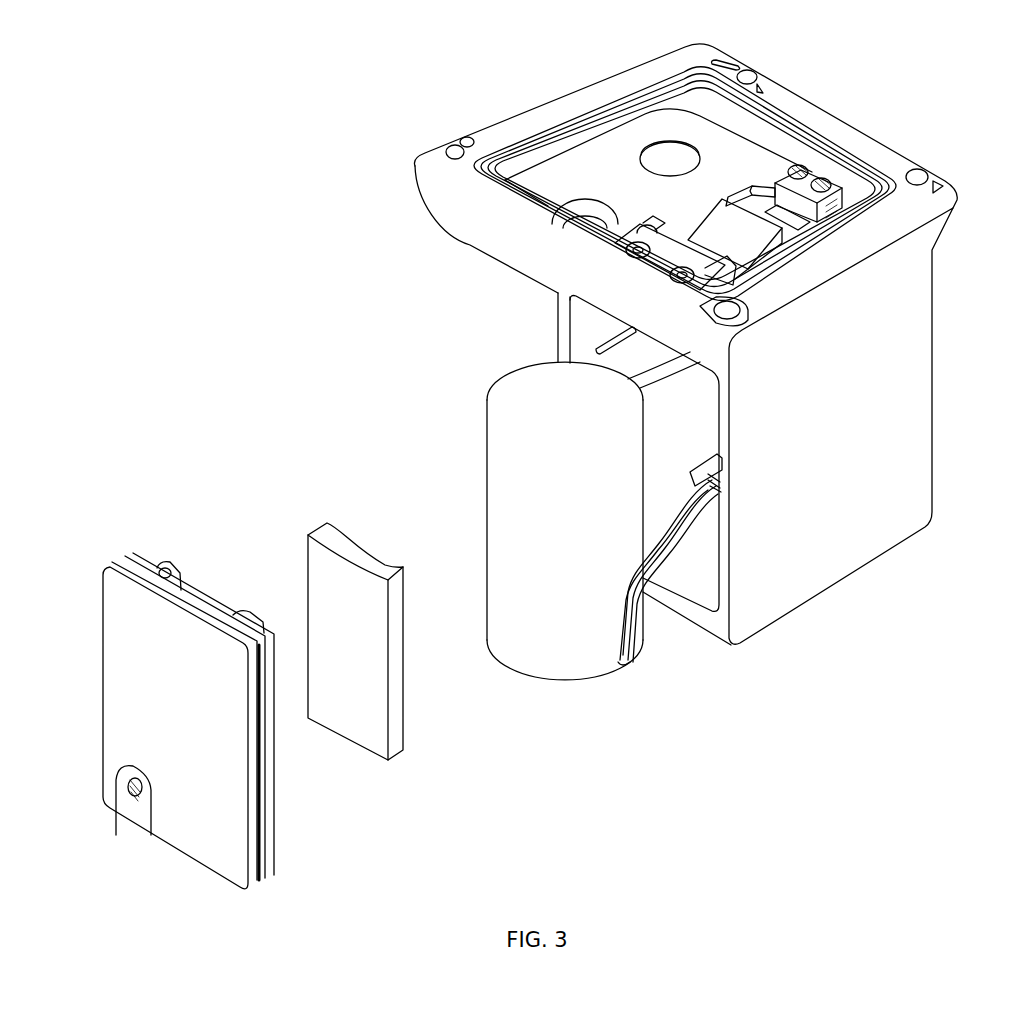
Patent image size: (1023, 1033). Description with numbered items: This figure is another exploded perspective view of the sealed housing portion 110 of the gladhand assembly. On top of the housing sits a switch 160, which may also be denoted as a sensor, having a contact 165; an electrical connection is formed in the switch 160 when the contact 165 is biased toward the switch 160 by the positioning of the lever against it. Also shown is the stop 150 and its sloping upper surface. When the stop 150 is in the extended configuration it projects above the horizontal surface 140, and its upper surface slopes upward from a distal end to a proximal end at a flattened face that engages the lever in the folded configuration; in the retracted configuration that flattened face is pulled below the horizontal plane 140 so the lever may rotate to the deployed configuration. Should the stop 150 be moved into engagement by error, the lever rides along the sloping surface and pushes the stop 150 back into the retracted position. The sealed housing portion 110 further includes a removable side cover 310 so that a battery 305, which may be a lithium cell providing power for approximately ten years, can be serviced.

The sealed housing portion 110 is at (905, 427).
The horizontal surface 140 is at (580, 177).
The stop 150 is at (737, 243).
The switch 160 is at (815, 180).
The contact 165 is at (757, 190).
The battery 305 is at (548, 633).
The removable side cover 310 is at (227, 820).